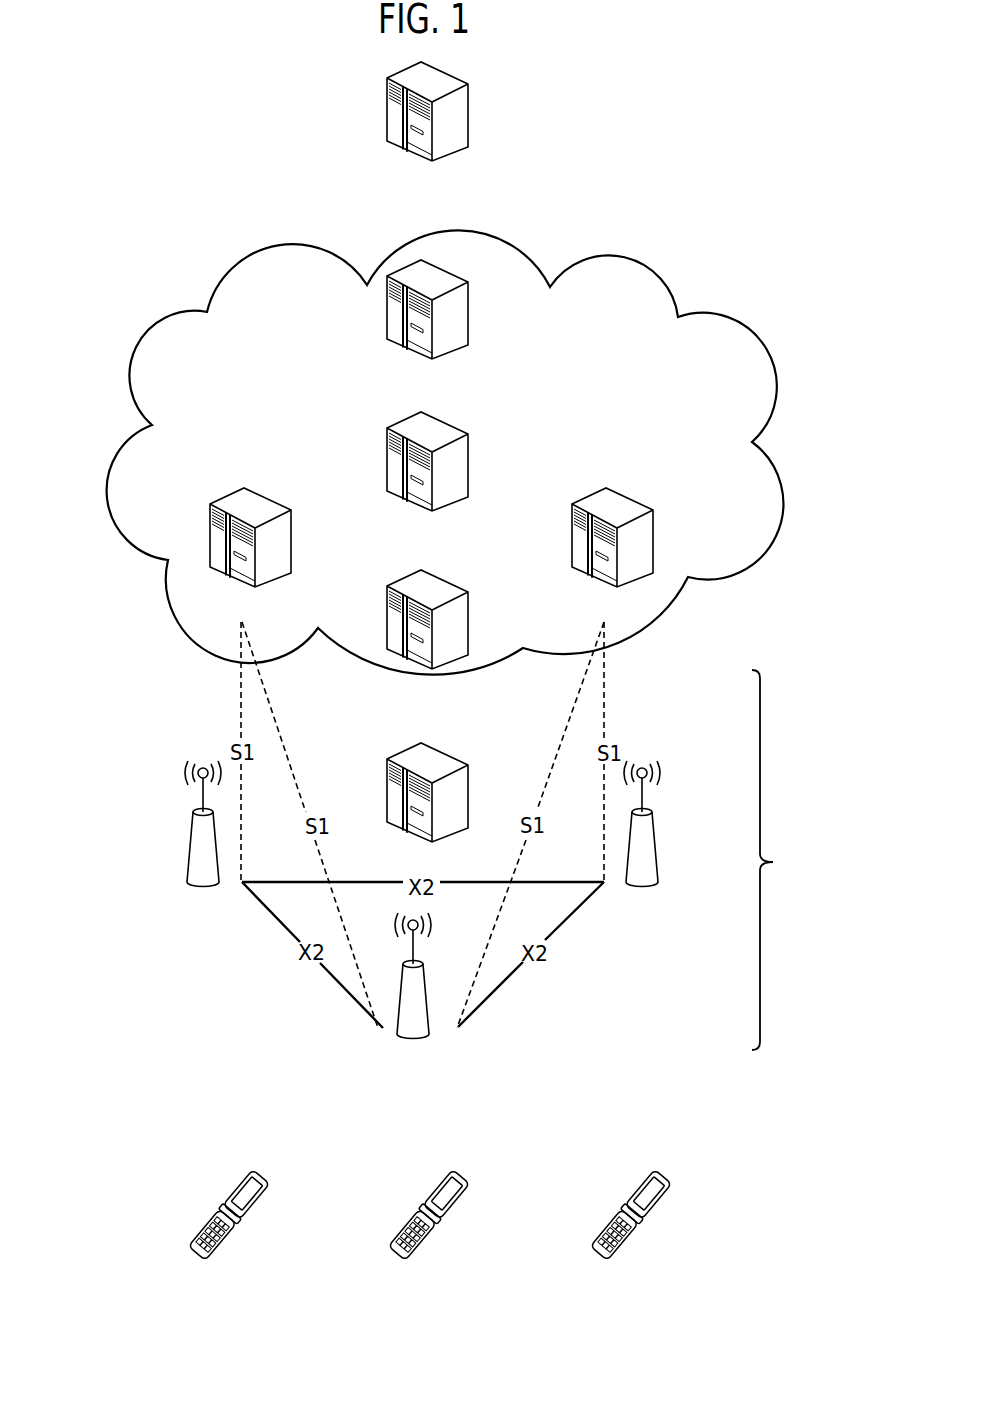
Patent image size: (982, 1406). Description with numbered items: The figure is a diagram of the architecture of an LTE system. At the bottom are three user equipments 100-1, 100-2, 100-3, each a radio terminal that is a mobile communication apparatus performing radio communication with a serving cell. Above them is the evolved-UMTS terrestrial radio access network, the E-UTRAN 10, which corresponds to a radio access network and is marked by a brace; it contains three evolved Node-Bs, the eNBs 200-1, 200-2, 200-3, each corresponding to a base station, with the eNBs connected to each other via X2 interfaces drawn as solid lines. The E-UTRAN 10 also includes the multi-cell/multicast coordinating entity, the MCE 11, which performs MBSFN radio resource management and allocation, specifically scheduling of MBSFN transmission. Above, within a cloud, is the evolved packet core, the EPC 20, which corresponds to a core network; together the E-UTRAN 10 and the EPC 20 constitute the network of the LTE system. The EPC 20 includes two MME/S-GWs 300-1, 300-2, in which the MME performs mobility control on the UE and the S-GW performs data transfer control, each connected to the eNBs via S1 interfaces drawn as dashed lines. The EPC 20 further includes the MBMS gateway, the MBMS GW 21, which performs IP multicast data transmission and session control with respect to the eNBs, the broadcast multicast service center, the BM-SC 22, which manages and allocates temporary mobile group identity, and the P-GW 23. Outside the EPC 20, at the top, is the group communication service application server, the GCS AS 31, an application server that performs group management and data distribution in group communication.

The group communication service application server 31 is at (469, 116).
The evolved packet core 20 is at (718, 312).
The P-GW 23 is at (468, 312).
The broadcast multicast service center 22 is at (468, 452).
The MBMS gateway 21 is at (470, 607).
The multi-cell/multicast coordinating entity 11 is at (438, 753).
The MME/S-GW 300-1 is at (272, 502).
The MME/S-GW 300-2 is at (645, 480).
The evolved Node-B 200-1 is at (188, 847).
The evolved Node-B 200-2 is at (432, 1010).
The evolved Node-B 200-3 is at (682, 820).
The evolved-UMTS terrestrial radio access network 10 is at (812, 860).
The user equipment 100-1 is at (248, 1175).
The user equipment 100-2 is at (448, 1175).
The user equipment 100-3 is at (650, 1175).